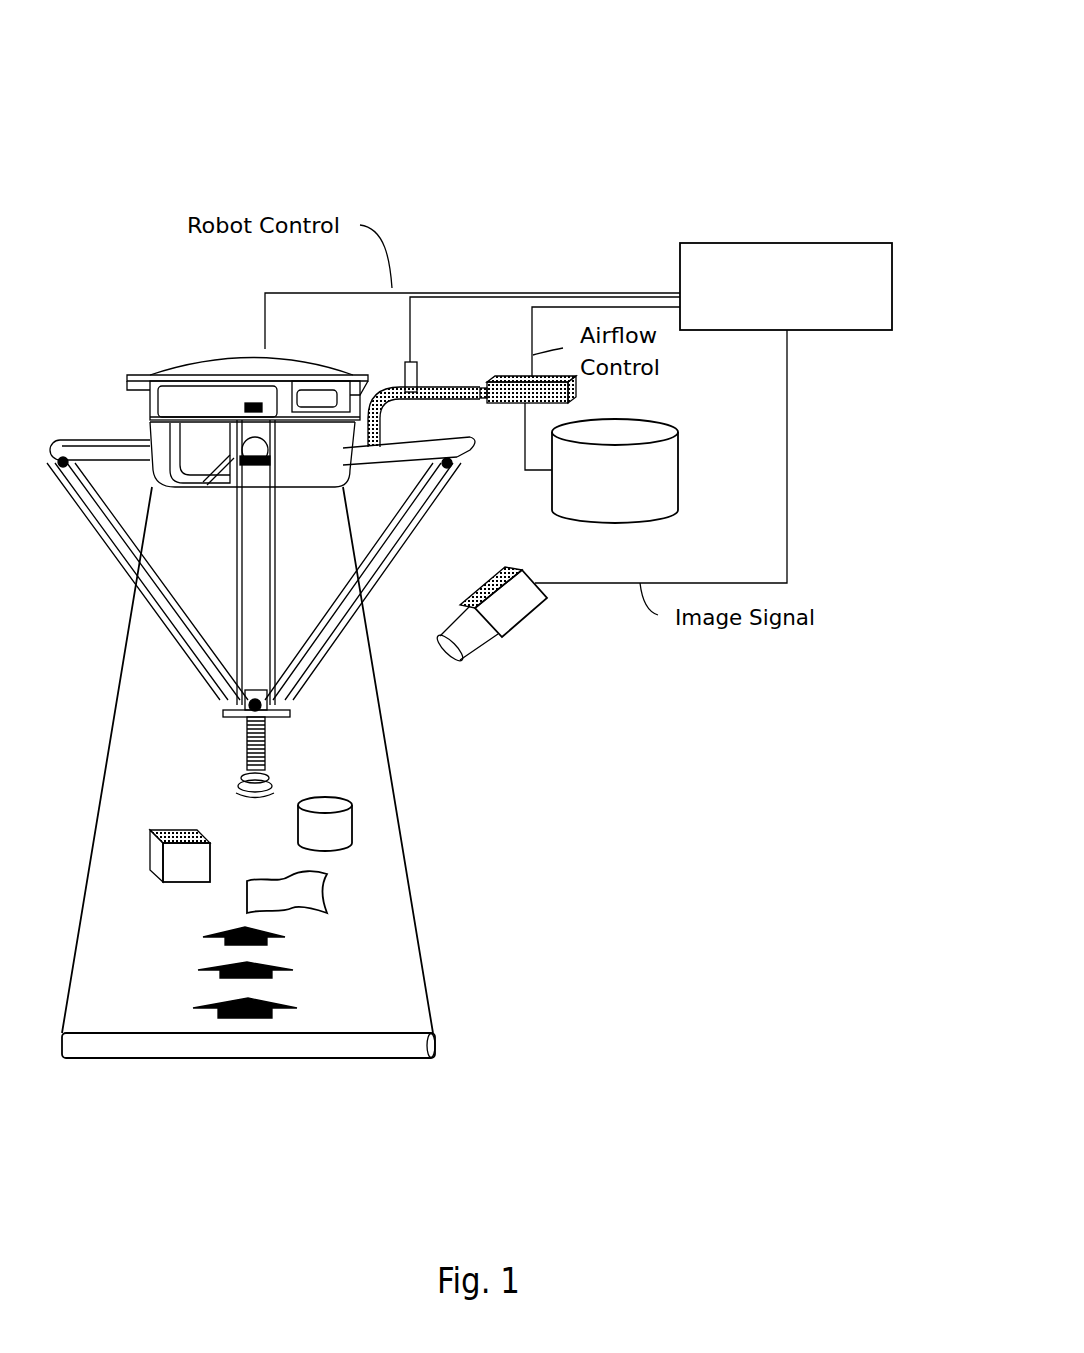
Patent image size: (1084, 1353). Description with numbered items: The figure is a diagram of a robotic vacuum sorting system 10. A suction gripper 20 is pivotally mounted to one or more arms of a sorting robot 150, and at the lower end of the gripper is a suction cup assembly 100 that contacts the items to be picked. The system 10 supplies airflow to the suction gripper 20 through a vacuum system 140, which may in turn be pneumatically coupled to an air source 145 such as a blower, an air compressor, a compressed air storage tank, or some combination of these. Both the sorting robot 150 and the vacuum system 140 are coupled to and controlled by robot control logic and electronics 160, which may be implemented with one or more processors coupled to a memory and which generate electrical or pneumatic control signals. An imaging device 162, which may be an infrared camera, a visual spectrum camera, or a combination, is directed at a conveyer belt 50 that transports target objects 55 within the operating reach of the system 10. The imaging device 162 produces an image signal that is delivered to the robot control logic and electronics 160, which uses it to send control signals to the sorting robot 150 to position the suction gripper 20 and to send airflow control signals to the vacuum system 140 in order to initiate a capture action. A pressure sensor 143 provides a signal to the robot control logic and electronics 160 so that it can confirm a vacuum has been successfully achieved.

The robotic vacuum sorting system 10 is at (172, 94).
The sorting robot 150 is at (197, 338).
The pressure sensor 143 is at (404, 381).
The vacuum system 140 is at (494, 350).
The robot control logic and electronics 160 is at (893, 285).
The air source 145 is at (678, 468).
The imaging device 162 is at (527, 618).
The suction gripper 20 is at (228, 735).
The suction cup assembly 100 is at (218, 784).
The conveyer belt 50 is at (393, 778).
The target objects 55 is at (185, 883).